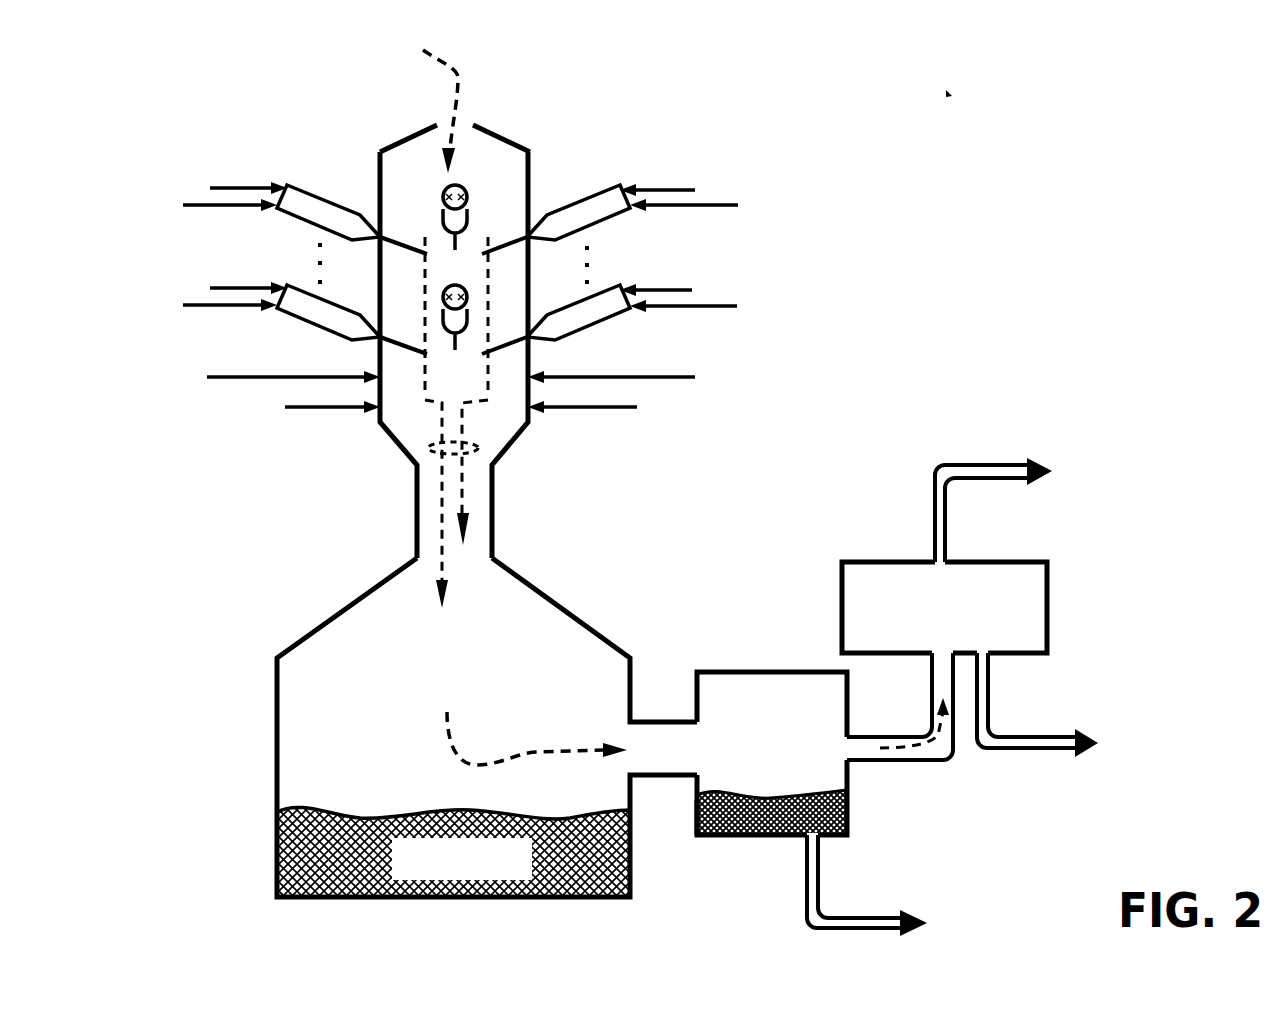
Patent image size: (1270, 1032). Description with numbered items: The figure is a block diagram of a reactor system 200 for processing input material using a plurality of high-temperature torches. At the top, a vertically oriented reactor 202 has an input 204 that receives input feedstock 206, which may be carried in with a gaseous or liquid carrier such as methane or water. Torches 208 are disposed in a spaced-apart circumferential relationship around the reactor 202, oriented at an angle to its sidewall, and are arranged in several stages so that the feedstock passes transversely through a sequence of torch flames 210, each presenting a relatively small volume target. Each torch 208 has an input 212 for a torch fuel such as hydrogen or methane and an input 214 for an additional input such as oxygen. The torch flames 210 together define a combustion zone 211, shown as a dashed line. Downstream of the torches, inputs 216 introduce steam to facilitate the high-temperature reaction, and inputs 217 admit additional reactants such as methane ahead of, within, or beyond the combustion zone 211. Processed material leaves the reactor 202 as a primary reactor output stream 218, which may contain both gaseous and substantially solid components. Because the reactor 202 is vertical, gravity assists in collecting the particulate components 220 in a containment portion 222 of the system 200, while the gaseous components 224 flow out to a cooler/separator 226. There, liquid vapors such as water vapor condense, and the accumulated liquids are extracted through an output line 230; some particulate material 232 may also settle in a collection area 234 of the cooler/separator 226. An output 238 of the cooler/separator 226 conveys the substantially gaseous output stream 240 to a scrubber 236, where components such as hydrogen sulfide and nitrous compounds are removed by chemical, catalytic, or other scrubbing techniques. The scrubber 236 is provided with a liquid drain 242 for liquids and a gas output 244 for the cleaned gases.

The reactor system 200 is at (948, 94).
The reactor 202 is at (380, 172).
The input 204 is at (473, 125).
The input feedstock 206 is at (440, 60).
The torches 208 is at (295, 212).
The torch flames 210 is at (440, 240).
The combustion zone 211 is at (432, 405).
The input 212 is at (240, 186).
The input 214 is at (200, 207).
The inputs 216 is at (300, 410).
The inputs 217 is at (240, 380).
The primary reactor output stream 218 is at (425, 445).
The particulate components 220 is at (453, 851).
The containment portion 222 is at (487, 727).
The gaseous components 224 is at (452, 743).
The cooler/separator 226 is at (762, 670).
The output line 230 is at (807, 885).
The particulate material 232 is at (772, 811).
The collection area 234 is at (697, 812).
The scrubber 236 is at (858, 558).
The output 238 is at (913, 763).
The gaseous output stream 240 is at (932, 735).
The liquid drain 242 is at (1040, 752).
The gas output 244 is at (958, 463).